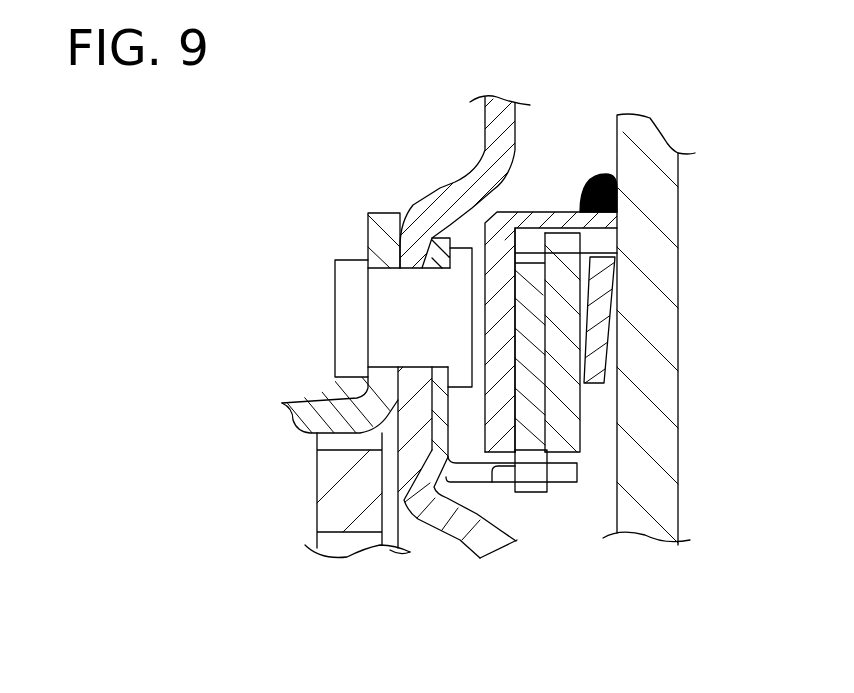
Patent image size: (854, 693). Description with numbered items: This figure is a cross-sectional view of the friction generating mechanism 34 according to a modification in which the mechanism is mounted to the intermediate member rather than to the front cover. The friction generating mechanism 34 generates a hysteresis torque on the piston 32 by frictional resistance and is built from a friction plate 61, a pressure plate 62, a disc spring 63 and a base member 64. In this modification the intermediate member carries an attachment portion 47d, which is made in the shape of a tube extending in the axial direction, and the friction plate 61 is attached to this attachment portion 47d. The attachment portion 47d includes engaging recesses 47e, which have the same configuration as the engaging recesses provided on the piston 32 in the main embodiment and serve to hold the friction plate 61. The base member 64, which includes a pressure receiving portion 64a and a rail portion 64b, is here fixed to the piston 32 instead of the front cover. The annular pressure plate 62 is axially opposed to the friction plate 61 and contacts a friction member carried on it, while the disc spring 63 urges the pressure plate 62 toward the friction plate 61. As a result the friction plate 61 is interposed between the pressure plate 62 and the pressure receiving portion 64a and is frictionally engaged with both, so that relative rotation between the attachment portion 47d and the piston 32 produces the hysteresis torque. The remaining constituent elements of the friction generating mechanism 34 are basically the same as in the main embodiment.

The piston 32 is at (680, 235).
The friction generating mechanism 34 is at (577, 510).
The attachment portion 47d is at (462, 465).
The engaging recesses 47e is at (518, 482).
The friction plate 61 is at (540, 430).
The pressure plate 62 is at (580, 405).
The disc spring 63 is at (603, 303).
The base member 64 is at (507, 252).
The pressure receiving portion 64a is at (485, 323).
The rail portion 64b is at (537, 211).